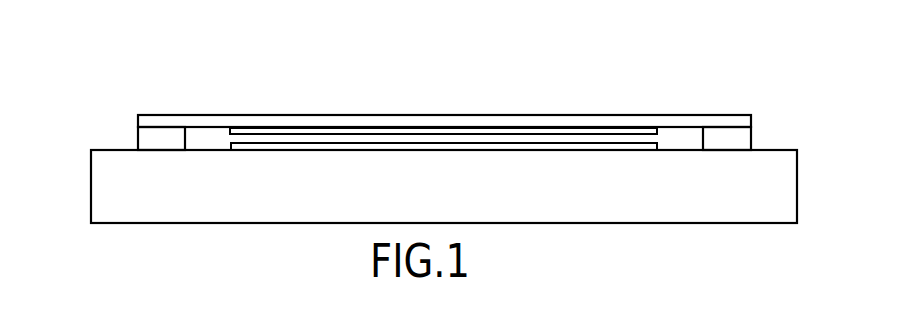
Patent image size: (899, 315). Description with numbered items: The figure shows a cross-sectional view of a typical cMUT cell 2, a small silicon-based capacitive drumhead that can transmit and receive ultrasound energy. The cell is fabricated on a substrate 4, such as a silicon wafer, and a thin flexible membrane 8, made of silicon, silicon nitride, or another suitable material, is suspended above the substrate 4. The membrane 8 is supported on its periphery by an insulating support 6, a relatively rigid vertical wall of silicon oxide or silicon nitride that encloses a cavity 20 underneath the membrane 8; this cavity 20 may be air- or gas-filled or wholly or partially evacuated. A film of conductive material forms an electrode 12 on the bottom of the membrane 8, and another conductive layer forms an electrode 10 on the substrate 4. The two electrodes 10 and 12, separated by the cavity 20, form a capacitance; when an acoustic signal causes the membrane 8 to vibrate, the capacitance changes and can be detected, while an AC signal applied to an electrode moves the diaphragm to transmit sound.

The cMUT cell 2 is at (677, 68).
The substrate 4 is at (798, 205).
The insulating support 6 is at (137, 138).
The membrane 8 is at (193, 120).
The electrode 10 is at (277, 148).
The electrode 12 is at (283, 127).
The cavity 20 is at (205, 137).